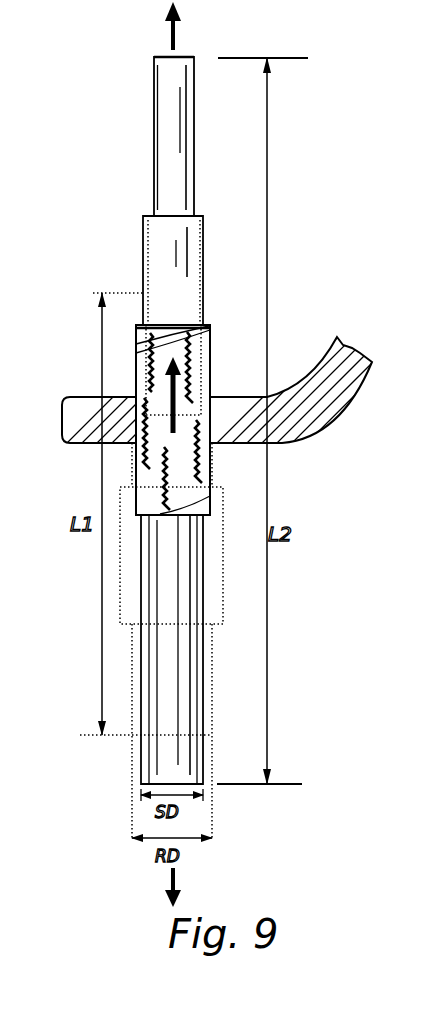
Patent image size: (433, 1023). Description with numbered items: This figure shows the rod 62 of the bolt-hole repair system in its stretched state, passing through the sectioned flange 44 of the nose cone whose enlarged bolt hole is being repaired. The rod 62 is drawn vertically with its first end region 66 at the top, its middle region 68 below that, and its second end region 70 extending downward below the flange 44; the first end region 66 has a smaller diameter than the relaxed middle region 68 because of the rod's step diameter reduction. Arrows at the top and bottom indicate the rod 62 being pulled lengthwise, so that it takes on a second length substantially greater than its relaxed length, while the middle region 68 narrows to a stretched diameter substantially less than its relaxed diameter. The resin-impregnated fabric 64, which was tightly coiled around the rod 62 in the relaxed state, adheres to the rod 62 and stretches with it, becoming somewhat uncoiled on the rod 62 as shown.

The flange 44 is at (231, 414).
The rod 62 is at (110, 246).
The fabric 64 is at (200, 476).
The first end region 66 is at (172, 167).
The middle region 68 is at (192, 250).
The second end region 70 is at (172, 713).